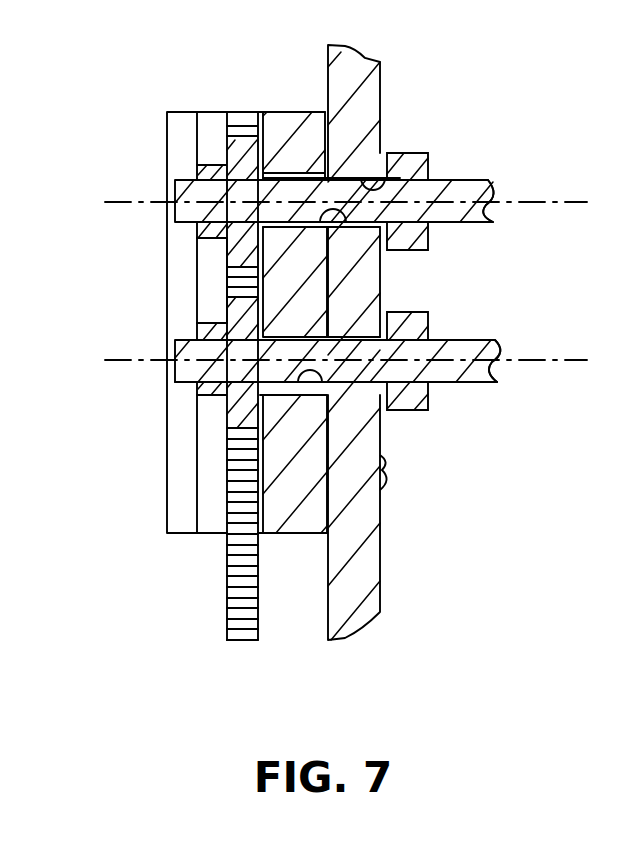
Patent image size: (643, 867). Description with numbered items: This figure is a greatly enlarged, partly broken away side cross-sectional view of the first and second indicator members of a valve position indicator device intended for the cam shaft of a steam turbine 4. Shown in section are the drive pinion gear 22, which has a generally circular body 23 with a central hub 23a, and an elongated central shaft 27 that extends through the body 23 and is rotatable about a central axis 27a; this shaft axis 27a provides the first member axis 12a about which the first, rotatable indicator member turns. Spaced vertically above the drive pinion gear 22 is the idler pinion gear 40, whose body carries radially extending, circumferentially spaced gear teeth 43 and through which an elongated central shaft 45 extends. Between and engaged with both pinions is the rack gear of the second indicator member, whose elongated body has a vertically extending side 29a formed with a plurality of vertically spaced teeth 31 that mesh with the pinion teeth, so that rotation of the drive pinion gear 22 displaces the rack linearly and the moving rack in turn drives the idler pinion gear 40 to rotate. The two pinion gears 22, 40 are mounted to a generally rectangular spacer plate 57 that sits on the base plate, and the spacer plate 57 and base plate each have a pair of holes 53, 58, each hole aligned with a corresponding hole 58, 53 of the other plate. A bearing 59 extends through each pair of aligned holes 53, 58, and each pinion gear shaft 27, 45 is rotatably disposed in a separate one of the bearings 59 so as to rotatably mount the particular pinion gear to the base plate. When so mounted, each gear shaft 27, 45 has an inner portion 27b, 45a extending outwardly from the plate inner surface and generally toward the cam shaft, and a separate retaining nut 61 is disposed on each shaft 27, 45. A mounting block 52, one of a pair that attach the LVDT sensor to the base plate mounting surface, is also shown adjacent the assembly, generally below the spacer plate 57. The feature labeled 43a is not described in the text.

The steam turbine 4 is at (492, 220).
The first member axis 12a is at (347, 334).
The drive pinion gear 22 is at (176, 404).
The circular body 23 is at (212, 313).
The central hub 23a is at (200, 330).
The central shaft 27 is at (479, 330).
The shaft central axis 27a is at (542, 360).
The shaft inner portion 27b is at (488, 374).
The rack body side 29a is at (249, 648).
The rack gear teeth 31 is at (231, 567).
The idler pinion gear 40 is at (195, 170).
The idler gear teeth 43 is at (212, 254).
The bushing flange 43a is at (200, 229).
The idler pinion shaft 45 is at (484, 170).
The idler shaft inner portion 45a is at (545, 202).
The mounting block 52 is at (392, 600).
The plate hole 53 is at (392, 175).
The spacer plate 57 is at (288, 98).
The plate hole 58 is at (350, 228).
The bearing 59 is at (319, 172).
The retaining nut 61 is at (412, 157).